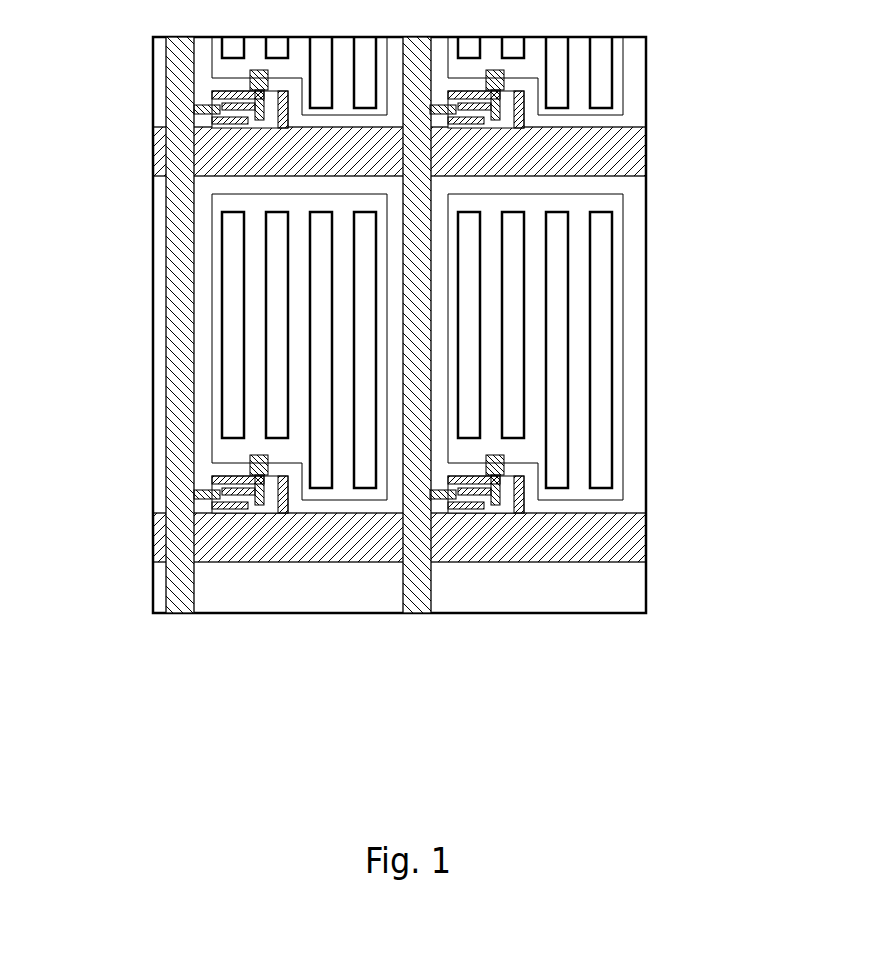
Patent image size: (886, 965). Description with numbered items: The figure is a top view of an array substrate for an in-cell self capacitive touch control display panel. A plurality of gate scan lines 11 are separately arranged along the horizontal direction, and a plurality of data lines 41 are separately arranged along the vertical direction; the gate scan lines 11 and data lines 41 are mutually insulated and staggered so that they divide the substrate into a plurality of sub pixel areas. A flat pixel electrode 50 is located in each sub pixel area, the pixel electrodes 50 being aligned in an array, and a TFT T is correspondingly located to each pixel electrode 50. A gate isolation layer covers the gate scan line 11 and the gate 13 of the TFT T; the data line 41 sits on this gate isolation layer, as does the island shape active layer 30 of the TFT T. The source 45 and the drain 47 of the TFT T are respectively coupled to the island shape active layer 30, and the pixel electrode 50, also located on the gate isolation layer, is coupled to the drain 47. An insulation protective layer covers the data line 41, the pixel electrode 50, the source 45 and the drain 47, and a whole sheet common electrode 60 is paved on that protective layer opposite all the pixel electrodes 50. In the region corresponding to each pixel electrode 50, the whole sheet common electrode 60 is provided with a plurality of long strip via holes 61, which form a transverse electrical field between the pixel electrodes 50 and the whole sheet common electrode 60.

The gate scan line 11 is at (620, 547).
The data line 41 is at (415, 582).
The pixel electrode 50 is at (290, 204).
The whole sheet common electrode 60 is at (628, 475).
The long strip via hole 61 is at (613, 350).
The gate 13 is at (218, 484).
The source 45 is at (225, 492).
The drain 47 is at (222, 507).
The island shape active layer 30 is at (260, 508).
The TFT T is at (148, 528).